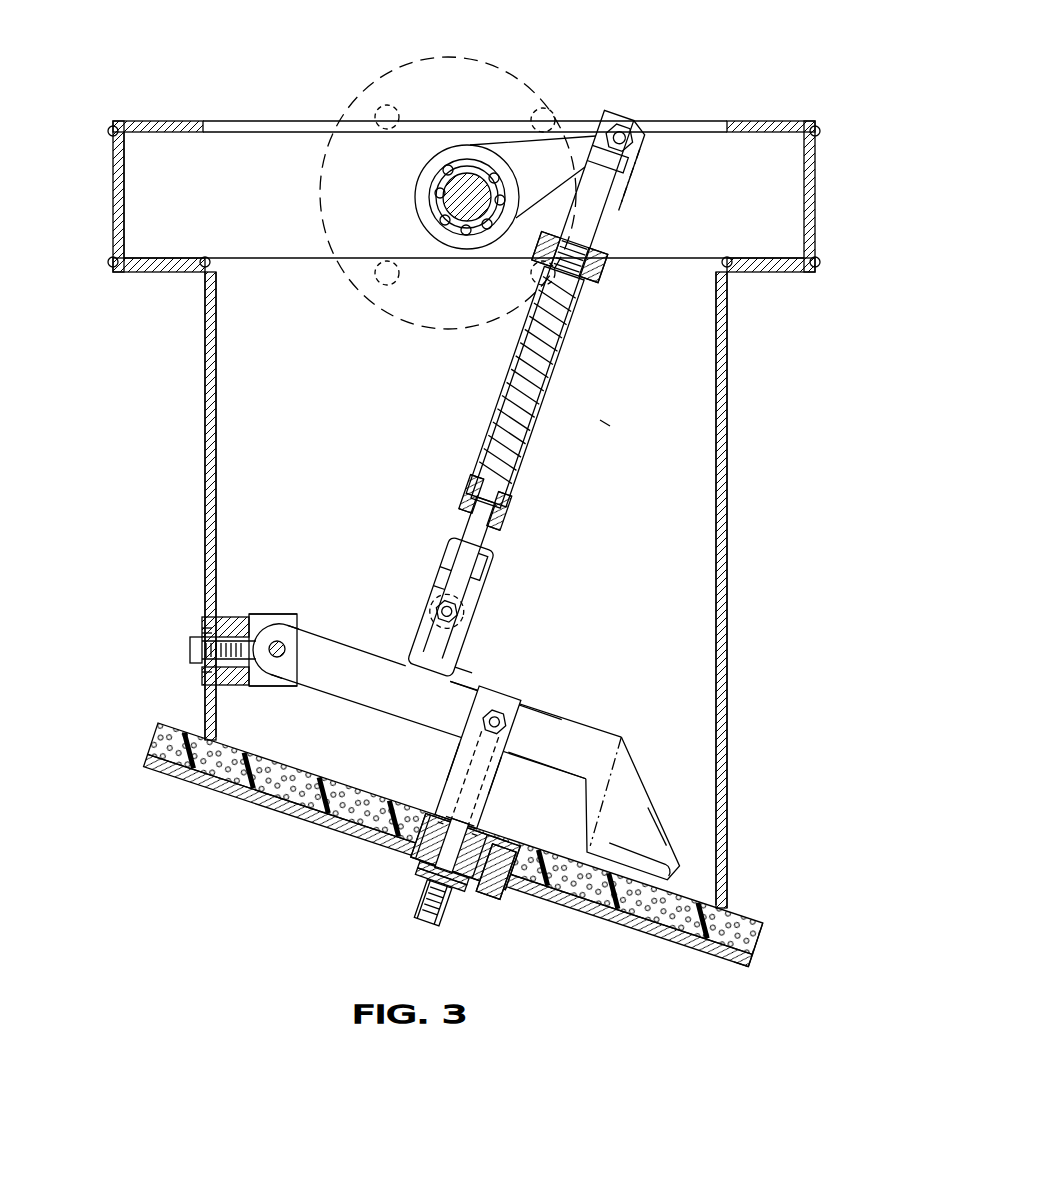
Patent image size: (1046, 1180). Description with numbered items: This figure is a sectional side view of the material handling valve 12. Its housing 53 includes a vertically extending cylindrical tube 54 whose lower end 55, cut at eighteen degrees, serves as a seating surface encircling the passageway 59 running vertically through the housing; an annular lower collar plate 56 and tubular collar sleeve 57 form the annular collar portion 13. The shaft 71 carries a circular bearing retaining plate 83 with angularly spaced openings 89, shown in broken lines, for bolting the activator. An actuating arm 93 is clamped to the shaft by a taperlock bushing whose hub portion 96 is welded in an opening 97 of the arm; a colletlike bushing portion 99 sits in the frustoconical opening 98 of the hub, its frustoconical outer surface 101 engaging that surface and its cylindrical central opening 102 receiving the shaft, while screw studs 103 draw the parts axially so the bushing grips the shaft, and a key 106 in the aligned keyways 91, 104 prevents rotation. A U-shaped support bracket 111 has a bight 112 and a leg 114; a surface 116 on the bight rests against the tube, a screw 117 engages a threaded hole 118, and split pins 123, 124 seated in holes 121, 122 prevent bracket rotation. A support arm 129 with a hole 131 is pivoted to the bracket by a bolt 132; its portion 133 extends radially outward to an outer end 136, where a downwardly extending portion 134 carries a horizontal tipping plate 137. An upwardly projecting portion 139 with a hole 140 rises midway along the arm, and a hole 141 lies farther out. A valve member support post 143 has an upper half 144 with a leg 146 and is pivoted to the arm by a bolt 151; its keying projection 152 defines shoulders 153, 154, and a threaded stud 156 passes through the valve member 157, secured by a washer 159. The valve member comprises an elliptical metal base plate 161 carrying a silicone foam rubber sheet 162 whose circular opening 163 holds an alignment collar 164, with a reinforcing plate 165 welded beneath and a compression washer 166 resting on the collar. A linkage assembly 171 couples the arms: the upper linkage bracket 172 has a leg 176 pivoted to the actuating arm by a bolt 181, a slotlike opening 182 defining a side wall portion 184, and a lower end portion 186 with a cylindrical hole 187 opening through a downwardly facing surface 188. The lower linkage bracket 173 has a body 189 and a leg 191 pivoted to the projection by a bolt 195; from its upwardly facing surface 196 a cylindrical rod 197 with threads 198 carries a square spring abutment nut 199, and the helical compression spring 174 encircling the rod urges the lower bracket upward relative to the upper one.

The valve 12 is at (180, 440).
The annular collar portion 13 is at (815, 120).
The housing 53 is at (208, 120).
The tube 54 is at (722, 493).
The lower end 55 is at (225, 750).
The lower collar plate 56 is at (178, 268).
The collar sleeve 57 is at (126, 205).
The passageway 59 is at (716, 580).
The shaft 71 is at (460, 205).
The bearing retaining plate 83 is at (490, 60).
The openings 89 is at (392, 107).
The keyway 91 is at (468, 170).
The actuating arm 93 is at (530, 132).
The hub portion 96 is at (436, 190).
The opening 97 is at (490, 178).
The frustoconical opening 98 is at (446, 220).
The bushing portion 99 is at (442, 199).
The frustoconical outer surface 101 is at (458, 232).
The cylindrical central opening 102 is at (476, 232).
The screw studs 103 is at (440, 192).
The keyway 104 is at (460, 175).
The key 106 is at (448, 168).
The support bracket 111 is at (282, 612).
The bight 112 is at (262, 612).
The leg 114 is at (300, 616).
The surface 116 is at (212, 625).
The screw 117 is at (190, 650).
The threaded hole 118 is at (252, 682).
The hole 121 is at (232, 616).
The hole 122 is at (222, 688).
The split pin 123 is at (205, 628).
The split pin 124 is at (210, 675).
The support arm 129 is at (590, 710).
The hole 131 is at (300, 672).
The bolt 132 is at (285, 644).
The portion 133 is at (380, 712).
The portion 134 is at (636, 790).
The outer end 136 is at (620, 760).
The tipping plate 137 is at (652, 850).
The upwardly projecting portion 139 is at (498, 654).
The hole 140 is at (465, 612).
The hole 141 is at (498, 768).
The valve member support post 143 is at (465, 765).
The upper half 144 is at (470, 790).
The leg 146 is at (532, 702).
The bolt 151 is at (507, 737).
The keying projection 152 is at (520, 822).
The shoulder 153 is at (446, 822).
The shoulder 154 is at (495, 842).
The threaded cylindrical stud 156 is at (420, 902).
The valve member 157 is at (752, 970).
The washer 159 is at (430, 882).
The base plate 161 is at (693, 962).
The sheet 162 is at (745, 935).
The circular opening 163 is at (496, 880).
The alignment collar 164 is at (400, 862).
The reinforcing plate 165 is at (405, 878).
The compression washer 166 is at (520, 850).
The linkage assembly 171 is at (600, 425).
The upper linkage bracket 172 is at (620, 232).
The lower linkage bracket 173 is at (448, 562).
The helical compression spring 174 is at (517, 405).
The leg 176 is at (638, 128).
The bolt 181 is at (642, 160).
The slotlike opening 182 is at (473, 472).
The side wall portion 184 is at (556, 382).
The lower end portion 186 is at (514, 512).
The cylindrical hole 187 is at (470, 497).
The downwardly facing surface 188 is at (500, 527).
The body 189 is at (480, 586).
The leg 191 is at (440, 616).
The bolt 195 is at (435, 576).
The upwardly facing surface 196 is at (455, 540).
The cylindrical rod 197 is at (492, 547).
The threads 198 is at (584, 286).
The spring abutment nut 199 is at (603, 275).